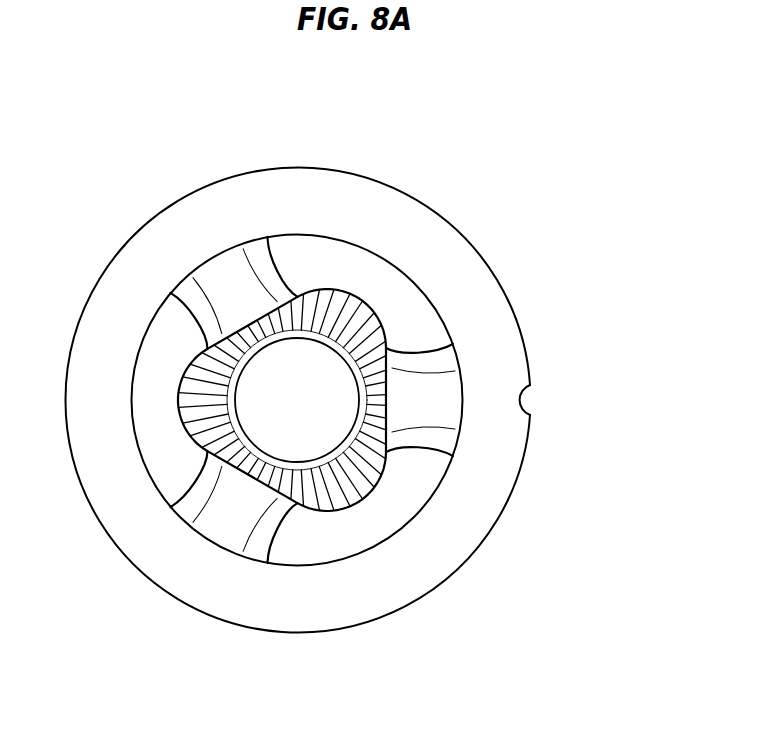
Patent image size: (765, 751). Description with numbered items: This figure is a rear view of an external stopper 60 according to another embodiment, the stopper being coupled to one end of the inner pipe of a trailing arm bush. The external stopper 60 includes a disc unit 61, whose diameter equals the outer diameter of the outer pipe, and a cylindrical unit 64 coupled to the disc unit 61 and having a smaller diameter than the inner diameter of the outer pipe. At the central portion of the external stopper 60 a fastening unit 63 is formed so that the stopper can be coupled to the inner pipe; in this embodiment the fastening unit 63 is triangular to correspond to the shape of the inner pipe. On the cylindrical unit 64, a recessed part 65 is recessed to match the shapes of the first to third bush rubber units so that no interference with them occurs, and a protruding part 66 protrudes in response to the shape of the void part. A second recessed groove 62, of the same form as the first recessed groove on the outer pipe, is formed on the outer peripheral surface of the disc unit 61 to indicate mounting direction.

The external stopper 60 is at (485, 126).
The disc unit 61 is at (473, 300).
The second recessed groove 62 is at (525, 395).
The fastening unit 63 is at (217, 265).
The cylindrical unit 64 is at (277, 700).
The recessed part 65 is at (237, 522).
The protruding part 66 is at (328, 532).